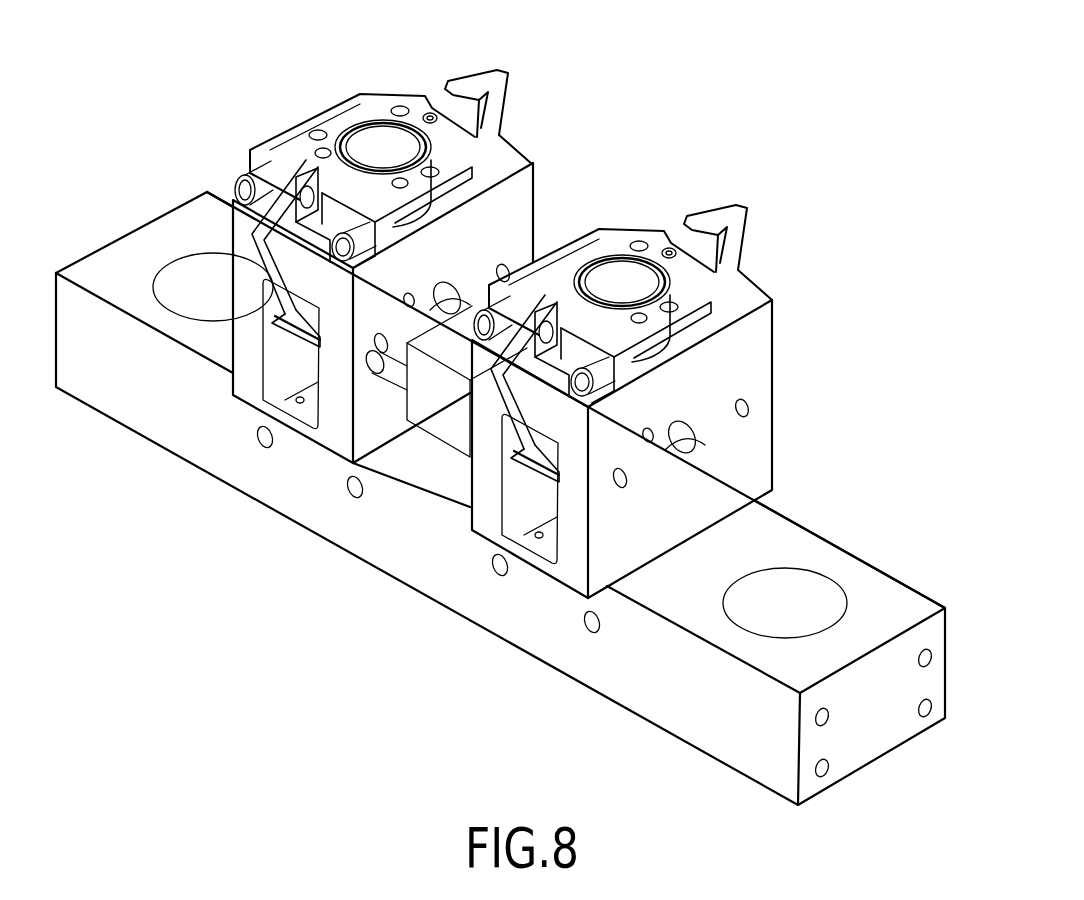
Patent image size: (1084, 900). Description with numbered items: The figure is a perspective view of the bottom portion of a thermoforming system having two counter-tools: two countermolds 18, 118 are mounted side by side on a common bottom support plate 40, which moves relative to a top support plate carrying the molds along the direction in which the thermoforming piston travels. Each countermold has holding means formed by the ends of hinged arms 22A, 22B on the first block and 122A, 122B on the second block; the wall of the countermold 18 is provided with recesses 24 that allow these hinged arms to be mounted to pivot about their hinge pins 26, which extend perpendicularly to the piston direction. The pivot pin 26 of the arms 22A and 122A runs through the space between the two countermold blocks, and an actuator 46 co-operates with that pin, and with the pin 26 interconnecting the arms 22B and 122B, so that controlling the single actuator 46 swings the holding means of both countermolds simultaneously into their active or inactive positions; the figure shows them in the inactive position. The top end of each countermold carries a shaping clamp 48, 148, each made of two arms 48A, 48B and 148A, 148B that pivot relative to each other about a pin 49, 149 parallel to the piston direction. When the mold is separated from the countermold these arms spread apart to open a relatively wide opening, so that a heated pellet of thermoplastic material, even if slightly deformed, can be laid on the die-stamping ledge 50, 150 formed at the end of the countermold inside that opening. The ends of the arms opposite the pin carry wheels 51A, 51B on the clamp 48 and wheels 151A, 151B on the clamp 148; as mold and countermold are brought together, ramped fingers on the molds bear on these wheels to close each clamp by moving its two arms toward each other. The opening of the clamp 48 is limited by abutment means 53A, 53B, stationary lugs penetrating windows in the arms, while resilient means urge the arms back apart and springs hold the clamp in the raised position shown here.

The bottom support plate 40 is at (824, 550).
The countermold 18 is at (535, 168).
The recess 24 is at (235, 383).
The hinge pin 26 is at (388, 376).
The actuator 46 is at (430, 432).
The shaping clamp 48 is at (352, 80).
The arm of the shaping clamp 48A is at (333, 120).
The arm of the shaping clamp 48B is at (468, 180).
The pin 49 is at (428, 102).
The die-stamping ledge 50 is at (383, 147).
The wheel 51A is at (236, 182).
The wheel 51B is at (362, 250).
The abutment means 53A is at (308, 130).
The abutment means 53B is at (410, 200).
The hinged arm 22A is at (505, 112).
The hinged arm 22B is at (255, 237).
The countermold 118 is at (772, 413).
The hinged arm 122A is at (752, 240).
The hinged arm 122B is at (510, 398).
The shaping clamp 148 is at (642, 218).
The arm of the shaping clamp 148A is at (573, 245).
The arm of the shaping clamp 148B is at (690, 332).
The pin 149 is at (690, 240).
The die-stamping ledge 150 is at (622, 282).
The wheel 151A is at (447, 304).
The wheel 151B is at (605, 386).